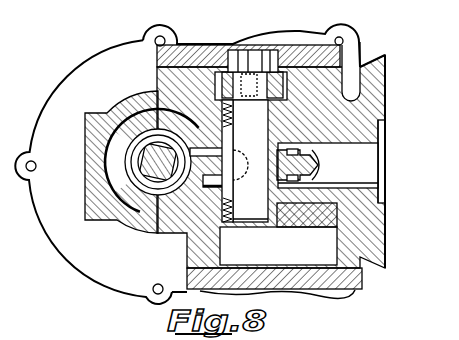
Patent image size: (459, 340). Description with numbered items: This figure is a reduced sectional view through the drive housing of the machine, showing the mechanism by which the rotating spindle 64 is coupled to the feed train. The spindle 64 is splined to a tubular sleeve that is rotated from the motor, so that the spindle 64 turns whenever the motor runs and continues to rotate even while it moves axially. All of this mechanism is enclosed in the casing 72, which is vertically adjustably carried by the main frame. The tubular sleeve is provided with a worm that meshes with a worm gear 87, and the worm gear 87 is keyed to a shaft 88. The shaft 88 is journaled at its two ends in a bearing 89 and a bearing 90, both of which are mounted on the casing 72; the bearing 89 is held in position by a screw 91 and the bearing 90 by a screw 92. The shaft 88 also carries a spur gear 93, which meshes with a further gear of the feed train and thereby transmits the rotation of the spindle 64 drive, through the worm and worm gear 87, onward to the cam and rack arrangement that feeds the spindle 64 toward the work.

The spindle 64 is at (158, 157).
The casing 72 is at (93, 131).
The worm gear 87 is at (321, 164).
The shaft 88 is at (257, 125).
The bearing 89 is at (168, 107).
The bearing 90 is at (279, 212).
The screw 91 is at (220, 112).
The screw 92 is at (225, 229).
The spur gear 93 is at (280, 88).